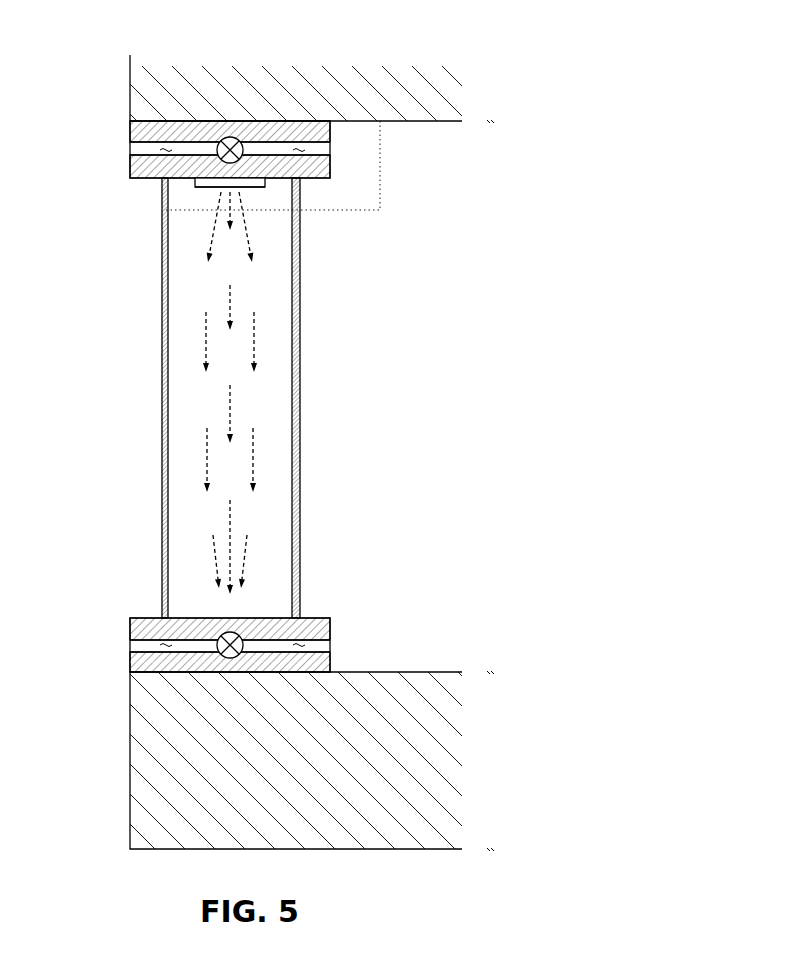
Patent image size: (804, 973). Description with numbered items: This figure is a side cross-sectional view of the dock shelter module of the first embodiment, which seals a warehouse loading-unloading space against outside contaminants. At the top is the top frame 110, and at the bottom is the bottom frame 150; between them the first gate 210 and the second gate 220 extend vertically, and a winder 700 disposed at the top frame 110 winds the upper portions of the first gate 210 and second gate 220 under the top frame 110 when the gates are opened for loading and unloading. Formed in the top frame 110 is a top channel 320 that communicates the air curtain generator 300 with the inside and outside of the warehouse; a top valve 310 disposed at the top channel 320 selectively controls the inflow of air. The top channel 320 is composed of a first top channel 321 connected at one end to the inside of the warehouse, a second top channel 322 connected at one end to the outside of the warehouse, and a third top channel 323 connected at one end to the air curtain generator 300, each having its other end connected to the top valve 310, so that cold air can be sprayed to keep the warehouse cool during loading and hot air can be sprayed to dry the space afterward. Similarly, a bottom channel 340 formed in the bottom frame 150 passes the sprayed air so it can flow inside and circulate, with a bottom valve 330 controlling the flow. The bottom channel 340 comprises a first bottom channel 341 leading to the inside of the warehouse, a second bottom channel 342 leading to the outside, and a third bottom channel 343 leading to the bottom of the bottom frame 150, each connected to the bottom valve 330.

The top frame 110 is at (130, 163).
The bottom frame 150 is at (198, 672).
The first gate 210 is at (160, 378).
The second gate 220 is at (300, 378).
The air curtain generator 300 is at (162, 186).
The top valve 310 is at (230, 137).
The top channel 320 is at (130, 143).
The first top channel 321 is at (299, 150).
The second top channel 322 is at (166, 150).
The third top channel 323 is at (242, 192).
The bottom valve 330 is at (233, 672).
The bottom channel 340 is at (130, 647).
The first bottom channel 341 is at (305, 625).
The second bottom channel 342 is at (165, 665).
The third bottom channel 343 is at (165, 618).
The winder 700 is at (380, 163).